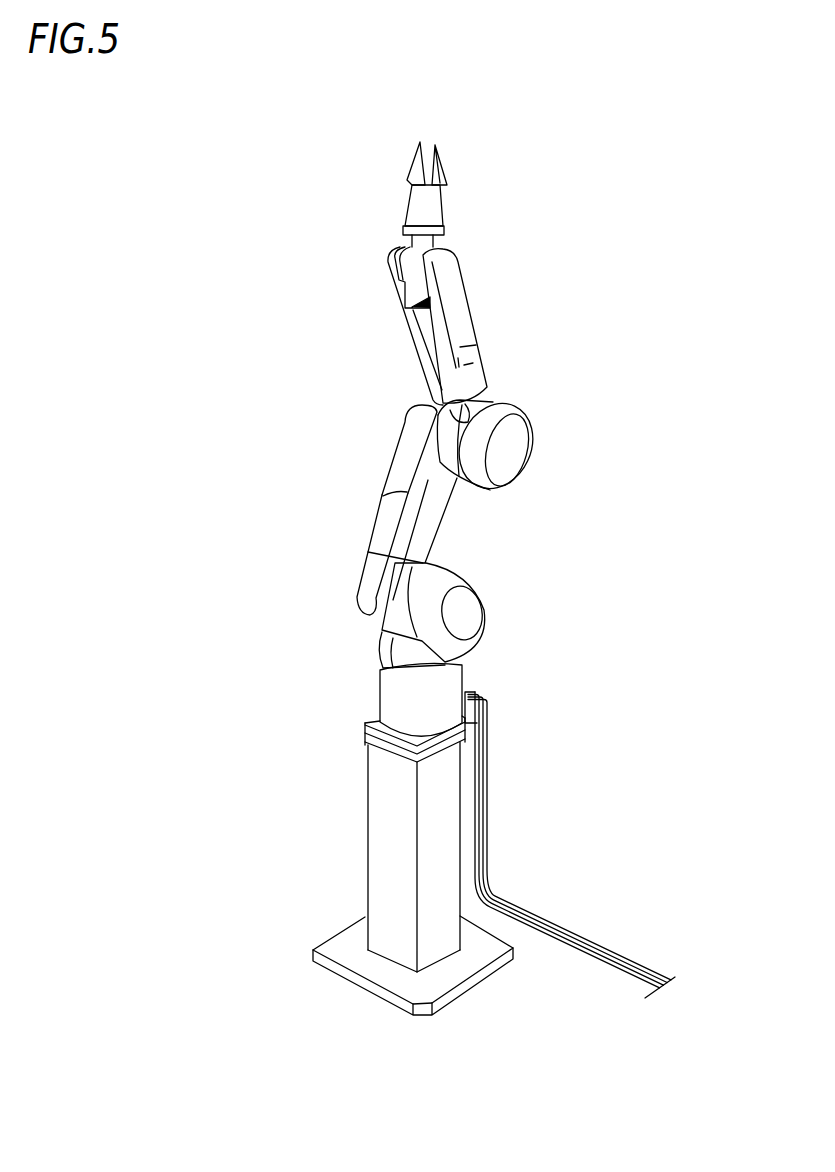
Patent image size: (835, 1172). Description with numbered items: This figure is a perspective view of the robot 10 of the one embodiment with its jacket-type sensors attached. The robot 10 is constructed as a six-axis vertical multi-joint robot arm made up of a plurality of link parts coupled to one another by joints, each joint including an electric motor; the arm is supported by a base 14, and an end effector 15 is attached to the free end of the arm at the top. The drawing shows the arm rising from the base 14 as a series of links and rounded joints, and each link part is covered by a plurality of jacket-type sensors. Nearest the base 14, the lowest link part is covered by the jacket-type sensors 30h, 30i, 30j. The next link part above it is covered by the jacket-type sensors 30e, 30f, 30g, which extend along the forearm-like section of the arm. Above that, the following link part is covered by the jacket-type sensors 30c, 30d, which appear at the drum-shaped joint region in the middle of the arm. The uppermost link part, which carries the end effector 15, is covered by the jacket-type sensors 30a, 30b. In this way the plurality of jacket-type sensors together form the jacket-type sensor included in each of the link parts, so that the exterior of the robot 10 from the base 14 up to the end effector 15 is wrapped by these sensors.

The robot 10 is at (276, 162).
The base 14 is at (397, 700).
The end effector 15 is at (430, 205).
The jacket-type sensor 30a is at (460, 327).
The jacket-type sensor 30b is at (420, 322).
The jacket-type sensor 30c is at (539, 445).
The jacket-type sensor 30d is at (505, 452).
The jacket-type sensor 30e is at (405, 468).
The jacket-type sensor 30f is at (378, 525).
The jacket-type sensor 30g is at (427, 520).
The jacket-type sensor 30h is at (383, 650).
The jacket-type sensor 30i is at (479, 607).
The jacket-type sensor 30j is at (468, 617).